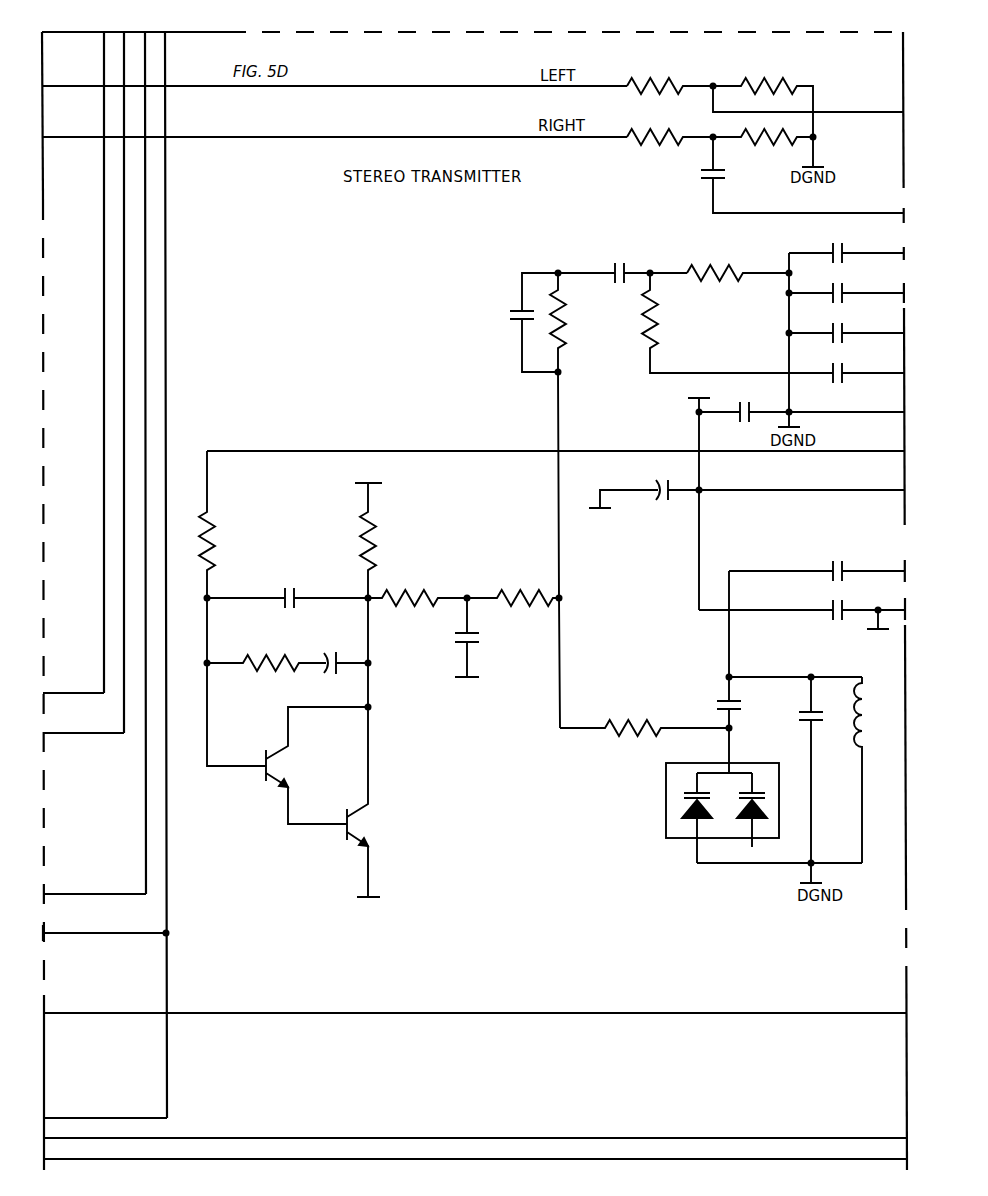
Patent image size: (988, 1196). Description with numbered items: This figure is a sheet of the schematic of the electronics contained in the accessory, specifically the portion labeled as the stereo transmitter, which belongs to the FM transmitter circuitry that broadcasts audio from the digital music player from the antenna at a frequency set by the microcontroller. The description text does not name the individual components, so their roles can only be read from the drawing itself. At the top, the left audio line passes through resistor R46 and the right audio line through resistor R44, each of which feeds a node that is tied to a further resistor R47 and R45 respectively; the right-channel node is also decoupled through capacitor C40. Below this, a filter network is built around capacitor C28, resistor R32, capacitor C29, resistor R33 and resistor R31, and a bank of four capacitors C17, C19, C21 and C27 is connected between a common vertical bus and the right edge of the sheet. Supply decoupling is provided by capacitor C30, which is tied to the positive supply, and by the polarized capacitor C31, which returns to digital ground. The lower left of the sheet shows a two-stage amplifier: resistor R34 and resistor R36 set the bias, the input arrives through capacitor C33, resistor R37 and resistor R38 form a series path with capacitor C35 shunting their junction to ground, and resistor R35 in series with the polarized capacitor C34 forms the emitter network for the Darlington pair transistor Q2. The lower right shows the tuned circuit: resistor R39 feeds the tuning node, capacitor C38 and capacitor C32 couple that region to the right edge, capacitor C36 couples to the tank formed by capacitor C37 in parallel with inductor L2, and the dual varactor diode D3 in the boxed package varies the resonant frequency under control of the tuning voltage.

The resistor 33K (left input) R46 is at (666, 84).
The resistor 10K R47 is at (763, 97).
The resistor 33K (right input) R44 is at (660, 135).
The resistor 10K R45 is at (763, 148).
The capacitor 1uF C40 is at (788, 175).
The capacitor 10uF C28 is at (622, 270).
The resistor 6K8 R32 is at (738, 273).
The capacitor 330pF C29 is at (517, 322).
The resistor 10K R33 is at (576, 322).
The resistor 4K7 R31 is at (737, 323).
The capacitor 2200pF C17 is at (846, 249).
The capacitor 150pF C19 is at (846, 290).
The capacitor 10uF C21 is at (846, 330).
The capacitor 1uF C27 is at (846, 370).
The capacitor .01uF C30 is at (790, 413).
The capacitor 100uF 4V C31 is at (741, 492).
The resistor 20K R34 is at (226, 524).
The resistor 1K0 R36 is at (375, 531).
The capacitor .047pF C33 is at (287, 599).
The resistor 10K R37 is at (417, 602).
The resistor 3K3 R38 is at (513, 602).
The capacitor 2200pF C35 is at (492, 647).
The resistor 100R R35 is at (266, 647).
The capacitor 33uF 6.3V C34 is at (328, 667).
The transistor 2SD2142K Q2 is at (332, 790).
The resistor 10K R39 is at (644, 727).
The capacitor 100pF C38 is at (817, 573).
The capacitor 1000pF C32 is at (802, 620).
The capacitor 150pF C36 is at (706, 702).
The capacitor 5pF C37 is at (795, 770).
The inductor 47nH L2 is at (880, 770).
The varactor diode BB200 D3 is at (727, 795).